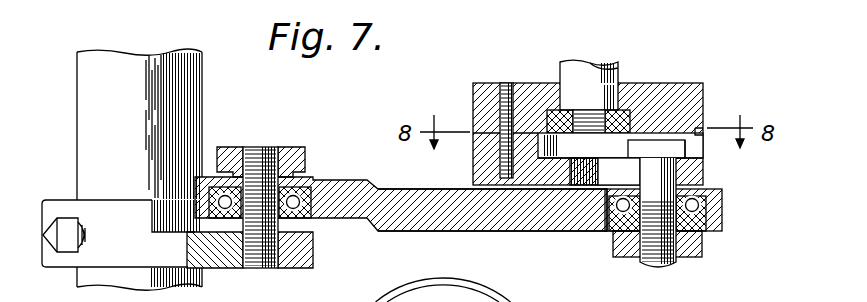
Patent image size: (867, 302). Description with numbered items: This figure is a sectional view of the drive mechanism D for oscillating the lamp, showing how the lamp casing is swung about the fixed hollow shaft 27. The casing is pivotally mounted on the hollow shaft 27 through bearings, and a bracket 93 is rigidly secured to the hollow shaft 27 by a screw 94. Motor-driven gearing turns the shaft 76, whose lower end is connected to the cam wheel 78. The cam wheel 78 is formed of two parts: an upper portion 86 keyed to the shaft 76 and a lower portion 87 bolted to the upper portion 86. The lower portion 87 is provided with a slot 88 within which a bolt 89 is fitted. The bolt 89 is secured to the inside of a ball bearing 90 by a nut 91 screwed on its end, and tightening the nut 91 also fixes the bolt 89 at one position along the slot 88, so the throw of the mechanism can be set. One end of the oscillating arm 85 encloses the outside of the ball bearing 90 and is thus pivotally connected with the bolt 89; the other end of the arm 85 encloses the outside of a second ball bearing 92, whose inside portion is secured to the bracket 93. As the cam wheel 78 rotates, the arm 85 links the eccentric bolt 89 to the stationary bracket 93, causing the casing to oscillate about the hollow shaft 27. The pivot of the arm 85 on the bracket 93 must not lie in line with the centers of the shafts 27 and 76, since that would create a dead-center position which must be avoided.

The hollow shaft 27 is at (139, 169).
The shaft 76 is at (573, 73).
The cam wheel 78 is at (629, 103).
The oscillating arm 85 is at (580, 220).
The upper portion 86 is at (695, 102).
The lower portion 87 is at (703, 163).
The slot 88 is at (605, 171).
The bolt 89 is at (657, 175).
The ball bearing 90 is at (722, 195).
The nut 91 is at (702, 248).
The ball bearing 92 is at (307, 176).
The bracket 93 is at (118, 233).
The screw 94 is at (55, 222).
The drive mechanism for oscillating the lamp D is at (423, 218).